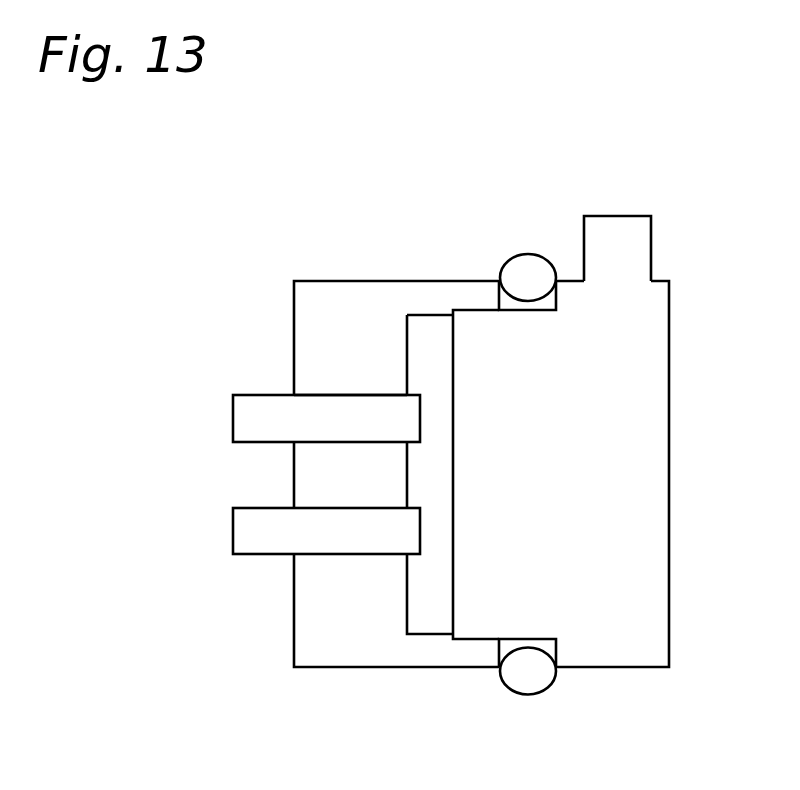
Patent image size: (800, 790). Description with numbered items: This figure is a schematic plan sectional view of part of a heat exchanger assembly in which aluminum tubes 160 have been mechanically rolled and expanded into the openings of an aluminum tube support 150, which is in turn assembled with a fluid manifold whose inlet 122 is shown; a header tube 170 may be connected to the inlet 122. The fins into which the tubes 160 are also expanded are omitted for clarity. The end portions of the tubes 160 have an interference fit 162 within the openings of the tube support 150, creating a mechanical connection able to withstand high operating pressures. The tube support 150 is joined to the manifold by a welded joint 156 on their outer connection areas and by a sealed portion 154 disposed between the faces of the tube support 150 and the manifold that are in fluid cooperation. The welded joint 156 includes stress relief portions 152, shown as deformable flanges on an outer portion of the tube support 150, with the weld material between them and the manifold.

The inlet 122 is at (670, 417).
The tube support 150 is at (332, 668).
The stress relief portion 152 is at (478, 280).
The sealed portion 154 is at (434, 603).
The welded joint 156 is at (528, 254).
The tubes 160 is at (247, 442).
The interference fit 162 is at (312, 393).
The header tube 170 is at (652, 240).